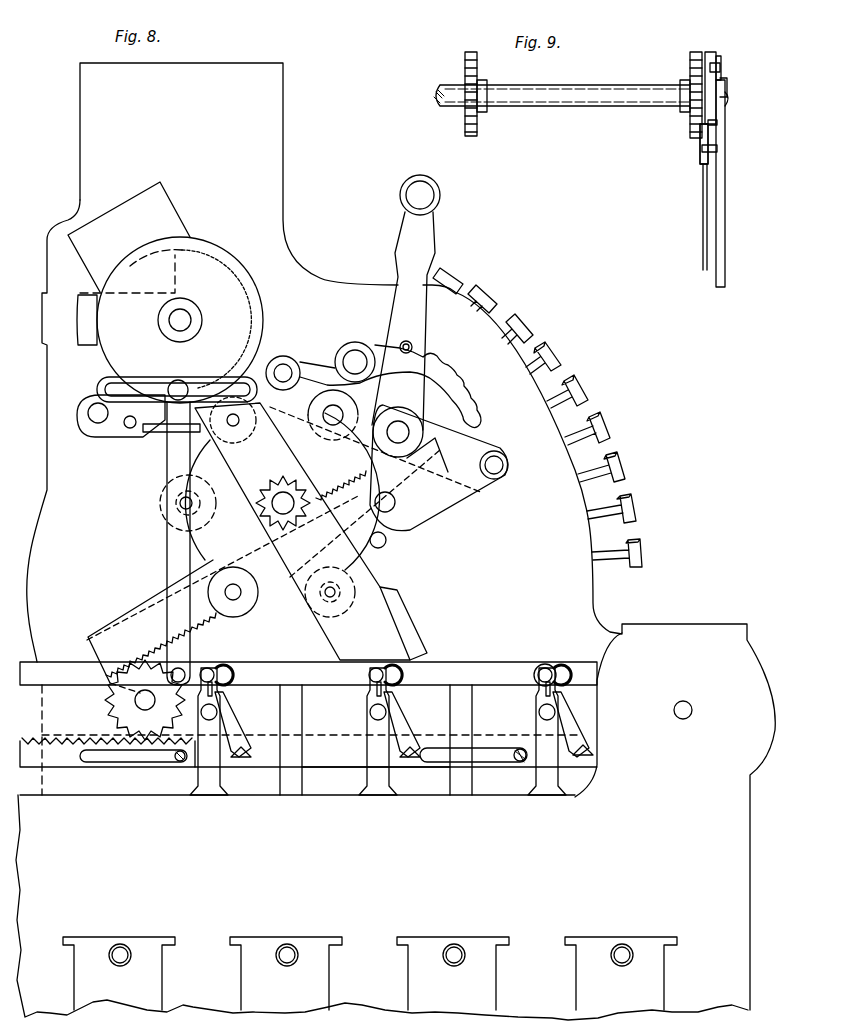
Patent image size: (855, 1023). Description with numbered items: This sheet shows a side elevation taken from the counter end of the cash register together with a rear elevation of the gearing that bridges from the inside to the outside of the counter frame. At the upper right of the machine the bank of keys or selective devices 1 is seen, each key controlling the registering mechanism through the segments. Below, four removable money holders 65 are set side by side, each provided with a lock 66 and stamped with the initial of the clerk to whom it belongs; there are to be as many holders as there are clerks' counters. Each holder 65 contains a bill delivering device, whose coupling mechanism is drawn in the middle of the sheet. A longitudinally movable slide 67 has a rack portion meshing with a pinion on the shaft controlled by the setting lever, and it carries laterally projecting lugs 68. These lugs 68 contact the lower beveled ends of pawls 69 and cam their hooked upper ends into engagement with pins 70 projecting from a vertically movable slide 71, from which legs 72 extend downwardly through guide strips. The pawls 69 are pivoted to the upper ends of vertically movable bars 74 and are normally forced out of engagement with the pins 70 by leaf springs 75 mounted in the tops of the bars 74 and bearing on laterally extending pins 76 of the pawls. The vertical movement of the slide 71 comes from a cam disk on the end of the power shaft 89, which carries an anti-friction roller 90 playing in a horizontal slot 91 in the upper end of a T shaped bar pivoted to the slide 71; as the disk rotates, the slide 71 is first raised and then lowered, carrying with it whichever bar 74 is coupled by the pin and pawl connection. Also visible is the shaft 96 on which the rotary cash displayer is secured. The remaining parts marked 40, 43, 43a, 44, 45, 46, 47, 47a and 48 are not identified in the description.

In FIG. 8, the bank of keys or selective devices 1 is at (598, 410).
In FIG. 8, the gear 40 is at (250, 318).
In FIG. 8, the power shaft 89 is at (183, 318).
In FIG. 8, the anti-friction roller 90 is at (175, 382).
In FIG. 8, the horizontal slot 91 is at (135, 382).
In FIG. 8, the lever 43 is at (428, 248).
In FIG. 8, the link 43a is at (160, 498).
In FIG. 8, the cam arm 44 is at (345, 490).
In FIG. 8, the pinion 45 is at (275, 490).
In FIG. 8, the rack 46 is at (205, 620).
In FIG. 8, the shaft 48 is at (132, 665).
In FIG. 9, the shaft 48 is at (545, 108).
In FIG. 9, the gear 47 is at (466, 128).
In FIG. 8, the gear 47a is at (110, 706).
In FIG. 9, the gear 47a is at (690, 70).
In FIG. 8, the vertically movable slide 71 is at (462, 674).
In FIG. 9, the vertically movable slide 71 is at (710, 52).
In FIG. 8, the legs 72 is at (368, 712).
In FIG. 9, the legs 72 is at (703, 228).
In FIG. 8, the vertically movable bars 74 is at (365, 752).
In FIG. 9, the vertically movable bars 74 is at (726, 190).
In FIG. 8, the pawls 69 is at (225, 740).
In FIG. 9, the pawls 69 is at (720, 58).
In FIG. 8, the pins 70 is at (376, 668).
In FIG. 9, the pins 70 is at (722, 67).
In FIG. 8, the laterally extending pins 76 is at (226, 684).
In FIG. 9, the laterally extending pins 76 is at (727, 86).
In FIG. 8, the leaf springs 75 is at (385, 700).
In FIG. 9, the leaf springs 75 is at (727, 98).
In FIG. 8, the longitudinally movable slide 67 is at (485, 750).
In FIG. 9, the longitudinally movable slide 67 is at (700, 148).
In FIG. 8, the laterally projecting lugs 68 is at (215, 760).
In FIG. 9, the laterally projecting lugs 68 is at (717, 149).
In FIG. 8, the shaft 96 is at (684, 704).
In FIG. 8, the lock 66 is at (120, 953).
In FIG. 8, the removable money holder 65 is at (270, 945).